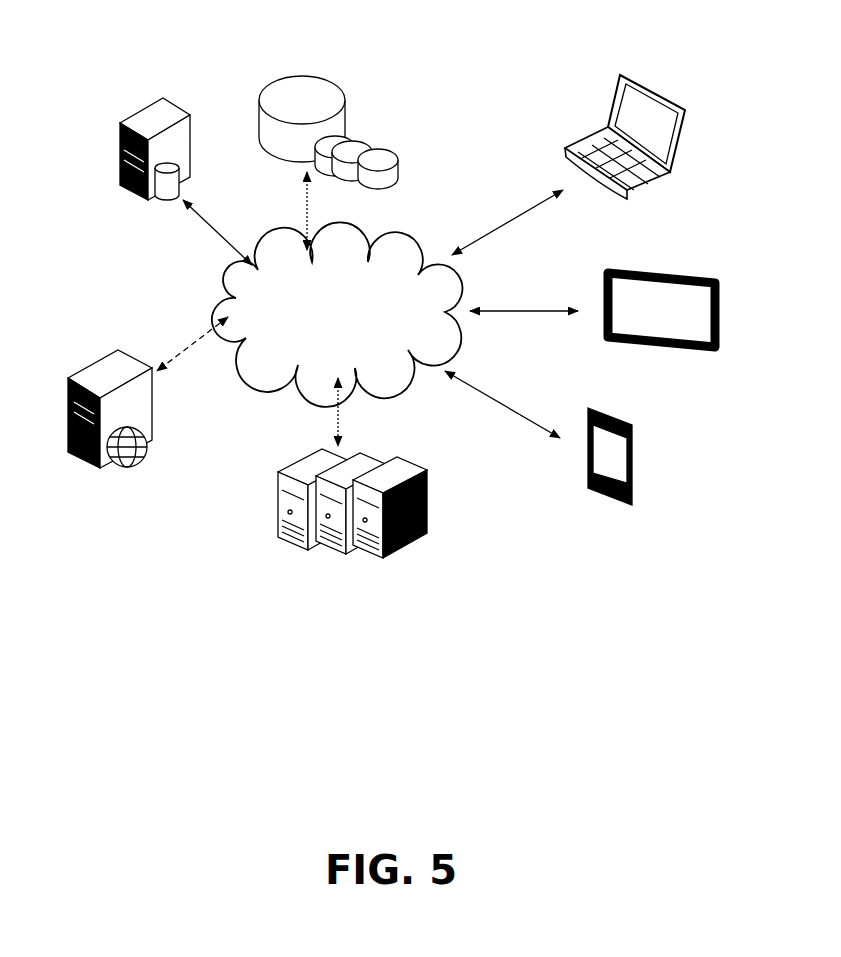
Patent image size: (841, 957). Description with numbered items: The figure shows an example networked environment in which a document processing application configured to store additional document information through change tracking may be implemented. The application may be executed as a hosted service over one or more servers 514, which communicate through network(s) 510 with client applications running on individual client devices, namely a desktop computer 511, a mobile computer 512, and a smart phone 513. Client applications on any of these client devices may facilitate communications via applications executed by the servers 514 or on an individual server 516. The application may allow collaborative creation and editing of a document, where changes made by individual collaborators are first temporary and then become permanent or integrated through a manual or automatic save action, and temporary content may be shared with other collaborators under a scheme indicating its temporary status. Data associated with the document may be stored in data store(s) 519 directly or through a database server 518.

The network(s) 510 is at (345, 236).
The desktop computer 511 is at (661, 74).
The mobile computer 512 is at (694, 249).
The smart phone 513 is at (639, 424).
The servers 514 is at (303, 450).
The individual server 516 is at (88, 356).
The database server 518 is at (156, 210).
The data store(s) 519 is at (317, 53).